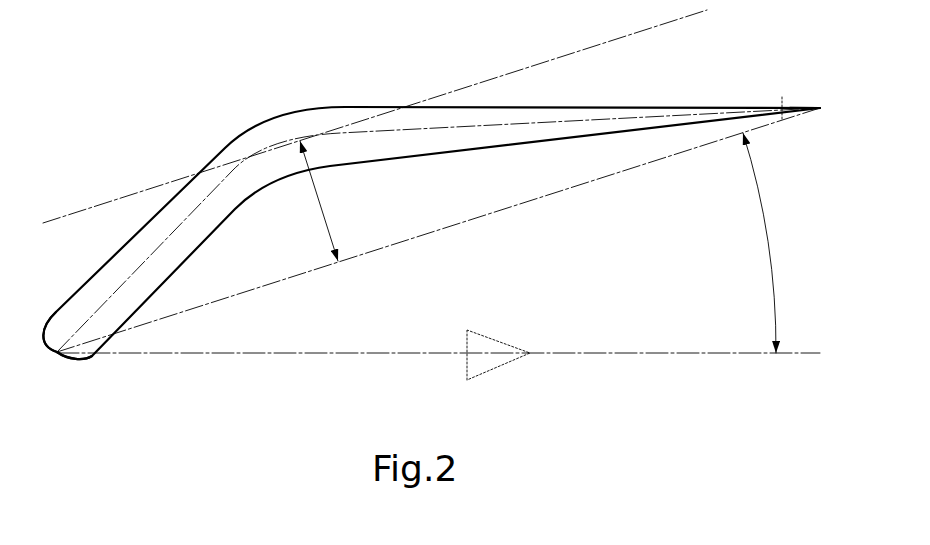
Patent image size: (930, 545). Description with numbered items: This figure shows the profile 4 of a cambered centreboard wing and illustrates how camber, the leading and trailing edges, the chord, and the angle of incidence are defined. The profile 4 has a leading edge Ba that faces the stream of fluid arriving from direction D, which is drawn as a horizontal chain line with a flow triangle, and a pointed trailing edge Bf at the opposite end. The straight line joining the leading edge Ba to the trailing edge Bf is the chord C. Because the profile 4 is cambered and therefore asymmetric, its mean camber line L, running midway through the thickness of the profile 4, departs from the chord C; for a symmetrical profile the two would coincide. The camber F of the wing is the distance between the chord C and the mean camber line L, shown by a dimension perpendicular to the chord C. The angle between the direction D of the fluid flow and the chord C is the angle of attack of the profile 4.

The profile 4 is at (236, 136).
The mean camber line L is at (207, 193).
The chord C is at (434, 233).
The leading edge Ba is at (58, 356).
The trailing edge Bf is at (816, 106).
The direction D is at (408, 353).
The camber F is at (375, 135).